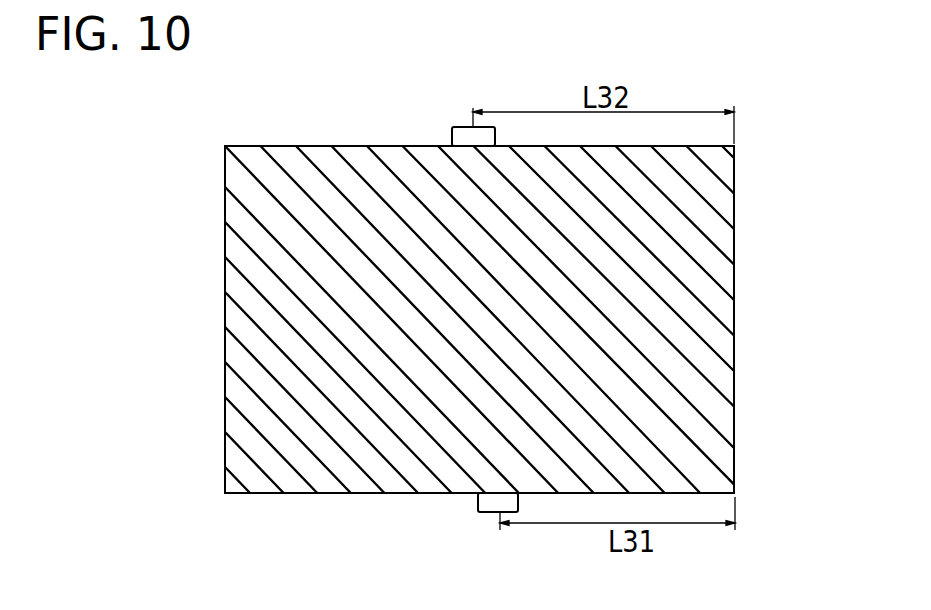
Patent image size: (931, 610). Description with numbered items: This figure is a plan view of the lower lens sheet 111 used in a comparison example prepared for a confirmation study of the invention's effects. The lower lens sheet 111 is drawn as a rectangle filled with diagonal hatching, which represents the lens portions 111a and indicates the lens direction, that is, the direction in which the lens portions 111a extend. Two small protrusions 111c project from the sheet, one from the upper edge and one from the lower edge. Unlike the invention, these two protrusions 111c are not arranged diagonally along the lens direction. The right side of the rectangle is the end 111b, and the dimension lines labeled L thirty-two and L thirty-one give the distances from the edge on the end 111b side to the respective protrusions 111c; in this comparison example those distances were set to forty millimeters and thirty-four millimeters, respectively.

The lower lens sheet 111 is at (223, 172).
The lens portions 111a is at (353, 153).
The end 111b is at (720, 311).
The protrusions 111c is at (455, 137).